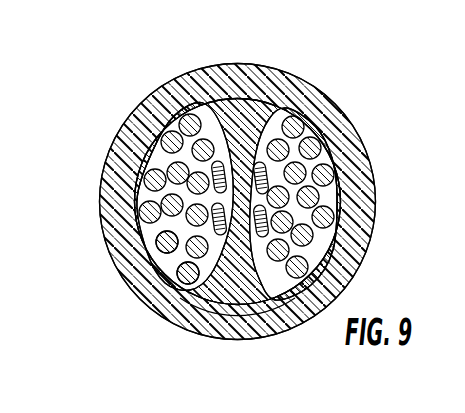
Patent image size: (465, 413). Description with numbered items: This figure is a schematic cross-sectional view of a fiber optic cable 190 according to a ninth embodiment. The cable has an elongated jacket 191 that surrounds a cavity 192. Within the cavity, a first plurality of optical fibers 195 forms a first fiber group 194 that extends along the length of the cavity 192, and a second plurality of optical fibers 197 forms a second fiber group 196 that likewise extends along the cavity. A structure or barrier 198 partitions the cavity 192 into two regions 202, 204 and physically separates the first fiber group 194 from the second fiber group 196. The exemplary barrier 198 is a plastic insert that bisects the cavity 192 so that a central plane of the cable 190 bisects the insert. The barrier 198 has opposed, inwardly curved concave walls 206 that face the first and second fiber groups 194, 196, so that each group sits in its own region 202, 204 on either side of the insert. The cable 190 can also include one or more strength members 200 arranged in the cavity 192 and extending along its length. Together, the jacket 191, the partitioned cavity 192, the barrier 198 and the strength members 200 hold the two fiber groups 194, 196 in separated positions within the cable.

The fiber optic cable 190 is at (353, 117).
The elongated jacket 191 is at (118, 203).
The cavity 192 is at (172, 264).
The first fiber group 194 is at (333, 196).
The optical fibers 195 is at (315, 257).
The second fiber group 196 is at (161, 157).
The optical fibers 197 is at (152, 122).
The barrier 198 is at (243, 313).
The strength members 200 is at (171, 129).
The region 202 is at (348, 262).
The region 204 is at (152, 232).
The concave walls 206 is at (286, 106).